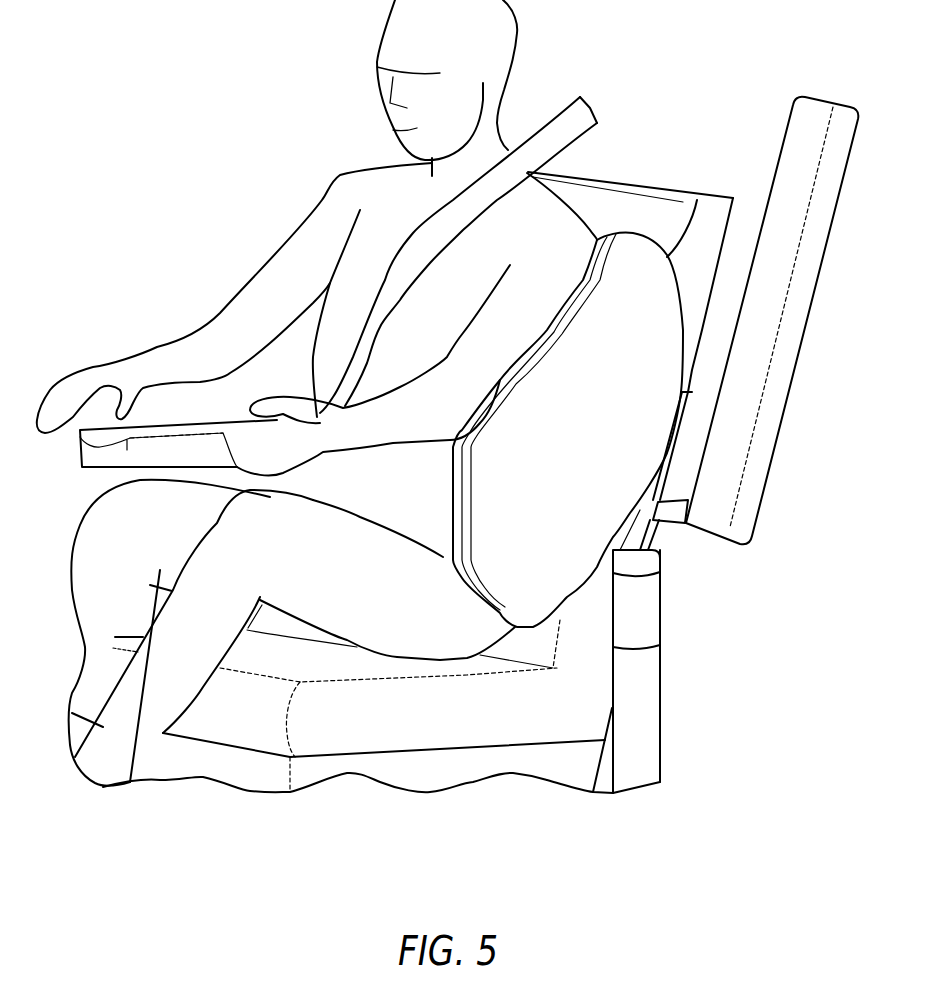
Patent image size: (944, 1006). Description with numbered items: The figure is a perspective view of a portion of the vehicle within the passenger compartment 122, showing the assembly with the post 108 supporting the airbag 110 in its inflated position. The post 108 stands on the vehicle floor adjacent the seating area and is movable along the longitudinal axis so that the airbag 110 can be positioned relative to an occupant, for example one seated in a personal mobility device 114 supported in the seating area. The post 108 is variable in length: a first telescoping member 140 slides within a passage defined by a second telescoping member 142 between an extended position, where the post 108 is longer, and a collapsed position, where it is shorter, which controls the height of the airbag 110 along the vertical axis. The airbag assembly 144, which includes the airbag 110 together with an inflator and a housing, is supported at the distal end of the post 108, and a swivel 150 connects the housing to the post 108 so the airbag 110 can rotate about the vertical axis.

The passenger compartment 122 is at (222, 121).
The airbag 110 is at (637, 267).
The airbag assembly 144 is at (692, 553).
The swivel 150 is at (648, 563).
The first telescoping member 140 is at (640, 612).
The post 108 is at (653, 482).
The second telescoping member 142 is at (647, 722).
The personal mobility device 114 is at (393, 727).